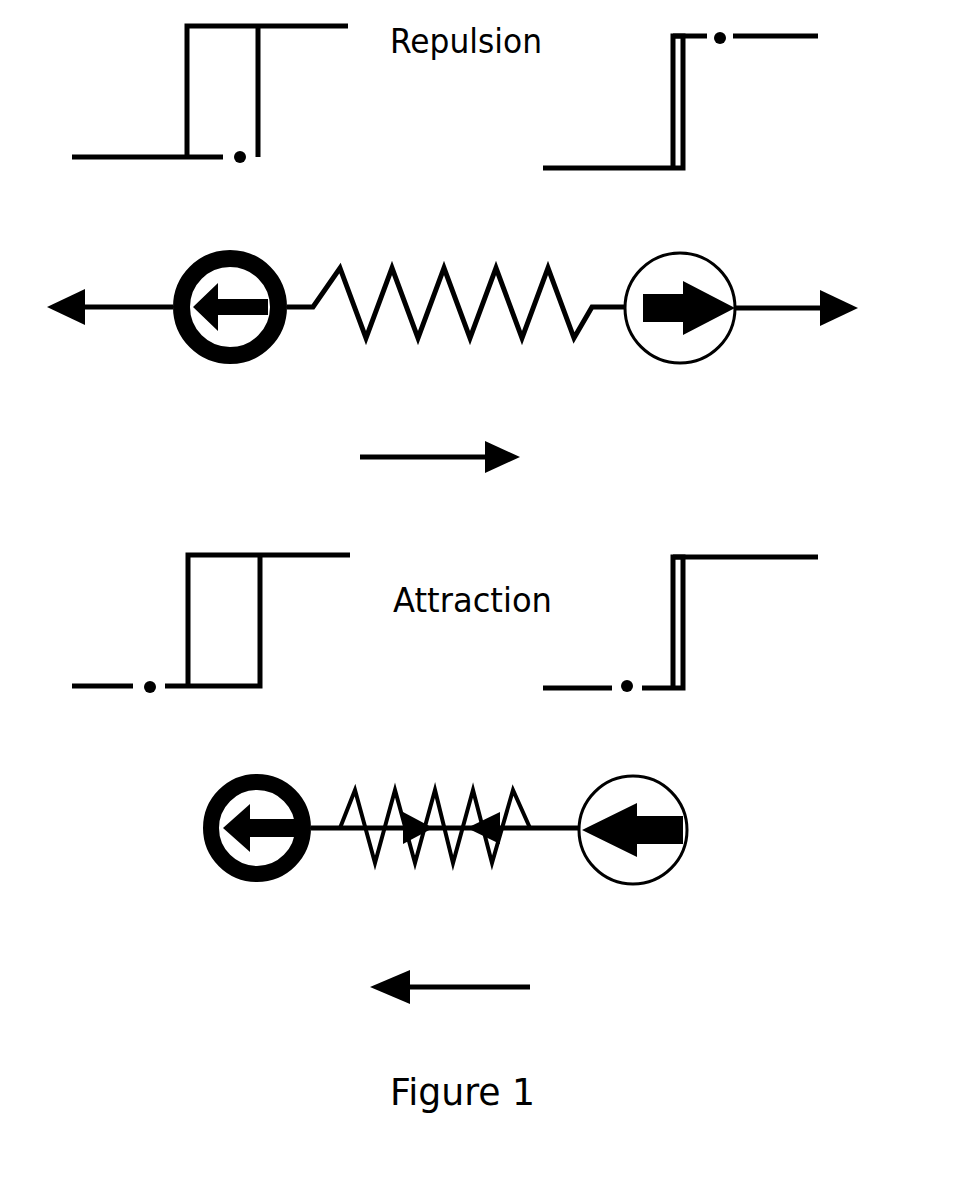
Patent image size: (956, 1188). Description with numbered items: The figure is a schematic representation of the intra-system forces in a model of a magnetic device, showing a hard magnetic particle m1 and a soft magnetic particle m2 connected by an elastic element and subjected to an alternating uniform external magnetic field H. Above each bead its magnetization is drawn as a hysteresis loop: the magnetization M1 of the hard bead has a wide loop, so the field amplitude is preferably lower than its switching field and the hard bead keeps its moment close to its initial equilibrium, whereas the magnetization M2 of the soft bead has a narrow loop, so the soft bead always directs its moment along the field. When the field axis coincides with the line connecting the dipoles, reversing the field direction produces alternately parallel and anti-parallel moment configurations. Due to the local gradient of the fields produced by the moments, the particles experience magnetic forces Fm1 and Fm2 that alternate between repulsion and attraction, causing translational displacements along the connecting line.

The hard magnetic particle m1 is at (243, 539).
The soft magnetic particle m2 is at (660, 545).
The magnetization of the hard bead M1 is at (211, 359).
The magnetization of the soft bead M2 is at (680, 362).
The magnetic force on the hard bead Fm1 is at (240, 594).
The magnetic force on the soft bead Fm2 is at (662, 595).
The external magnetic field H is at (445, 690).